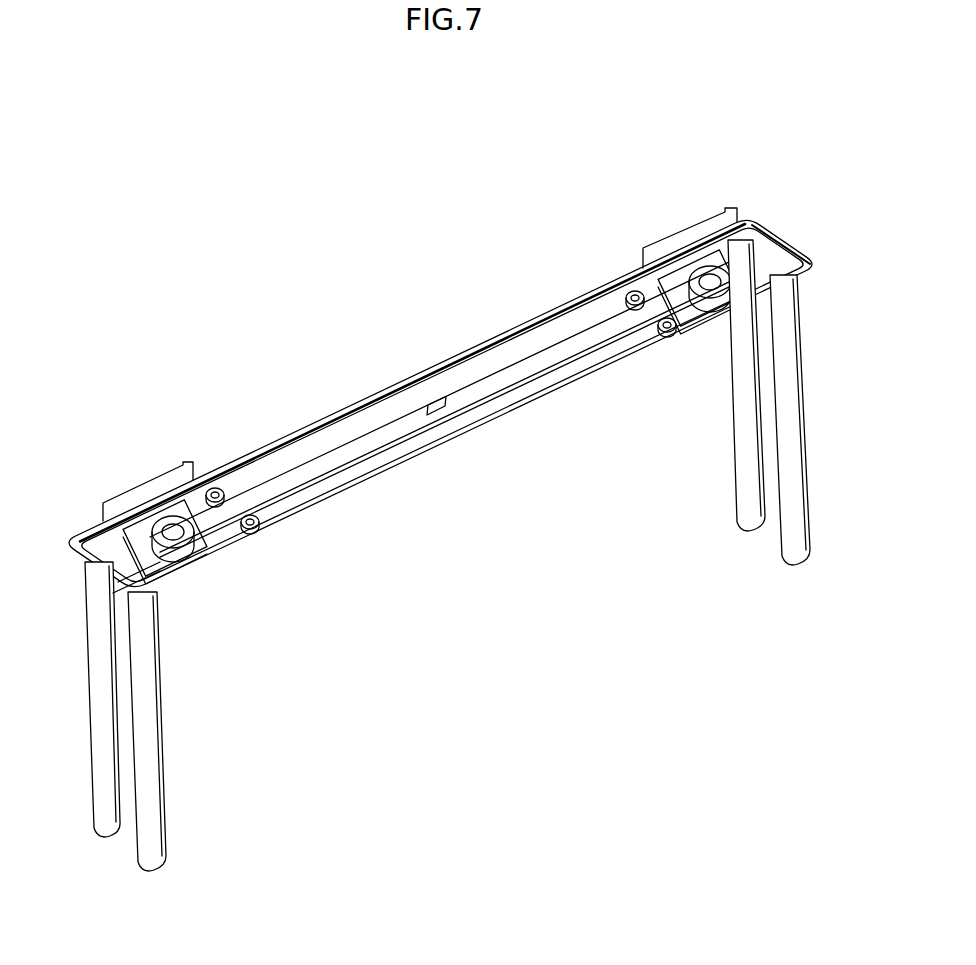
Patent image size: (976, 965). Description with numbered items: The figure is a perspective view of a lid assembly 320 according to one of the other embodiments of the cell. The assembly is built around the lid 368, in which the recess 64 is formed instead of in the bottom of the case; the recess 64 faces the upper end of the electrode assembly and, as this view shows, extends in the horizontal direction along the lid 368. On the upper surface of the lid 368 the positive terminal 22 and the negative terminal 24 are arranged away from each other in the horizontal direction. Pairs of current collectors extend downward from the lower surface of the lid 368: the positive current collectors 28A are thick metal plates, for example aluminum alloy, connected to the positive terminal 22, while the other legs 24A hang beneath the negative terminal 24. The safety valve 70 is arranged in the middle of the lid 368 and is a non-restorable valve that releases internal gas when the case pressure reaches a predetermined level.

The header assembly 320 is at (614, 160).
The positive terminal 22 is at (160, 487).
The negative terminal 24 is at (701, 230).
The first legs 24A is at (100, 703).
The positive current collectors 28A is at (792, 411).
The recess 64 is at (546, 365).
The safety valve 70 is at (440, 420).
The lid 368 is at (315, 499).